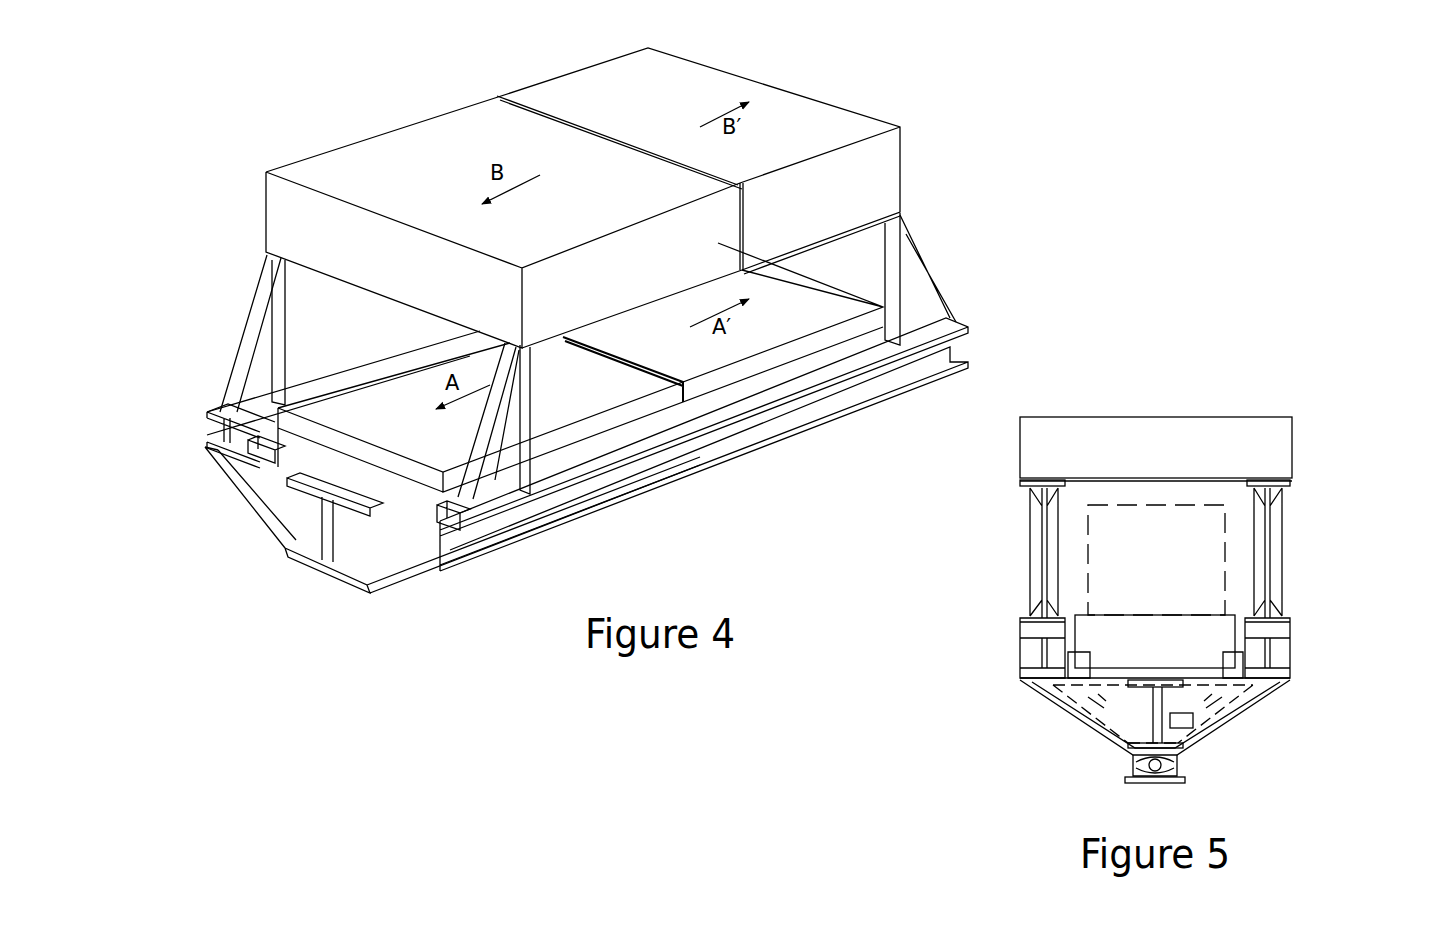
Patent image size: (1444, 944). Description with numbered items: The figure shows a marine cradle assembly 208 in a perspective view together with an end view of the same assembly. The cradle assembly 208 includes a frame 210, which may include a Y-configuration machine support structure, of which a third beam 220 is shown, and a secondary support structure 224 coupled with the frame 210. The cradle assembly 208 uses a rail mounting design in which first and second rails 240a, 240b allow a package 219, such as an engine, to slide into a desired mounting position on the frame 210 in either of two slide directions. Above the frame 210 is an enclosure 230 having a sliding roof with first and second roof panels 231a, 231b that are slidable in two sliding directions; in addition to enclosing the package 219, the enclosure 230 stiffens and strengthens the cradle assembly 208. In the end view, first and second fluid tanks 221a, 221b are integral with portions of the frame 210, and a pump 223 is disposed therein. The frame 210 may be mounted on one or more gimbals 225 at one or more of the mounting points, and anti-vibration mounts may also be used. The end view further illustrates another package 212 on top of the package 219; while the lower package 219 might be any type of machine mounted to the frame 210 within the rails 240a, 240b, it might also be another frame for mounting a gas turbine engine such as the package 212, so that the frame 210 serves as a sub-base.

In FIG. 4, the marine cradle assembly 208 is at (208, 382).
In FIG. 4, the frame 210 is at (308, 522).
In FIG. 5, the frame 210 is at (1031, 784).
In FIG. 5, the package 212 is at (1217, 516).
In FIG. 4, the package 219 is at (390, 468).
In FIG. 5, the package 219 is at (1215, 643).
In FIG. 4, the third beam 220 is at (355, 545).
In FIG. 5, the first fluid tank 221a is at (1082, 718).
In FIG. 5, the second fluid tank 221b is at (1220, 722).
In FIG. 5, the pump 223 is at (1195, 722).
In FIG. 4, the secondary support structure 224 is at (215, 437).
In FIG. 5, the gimbal 225 is at (1192, 780).
In FIG. 4, the enclosure 230 is at (250, 213).
In FIG. 5, the enclosure 230 is at (1290, 568).
In FIG. 4, the first roof panel 231a is at (504, 222).
In FIG. 5, the first roof panel 231a is at (1217, 443).
In FIG. 4, the second roof panel 231b is at (699, 198).
In FIG. 4, the first rail 240a is at (447, 515).
In FIG. 4, the second rail 240b is at (225, 460).